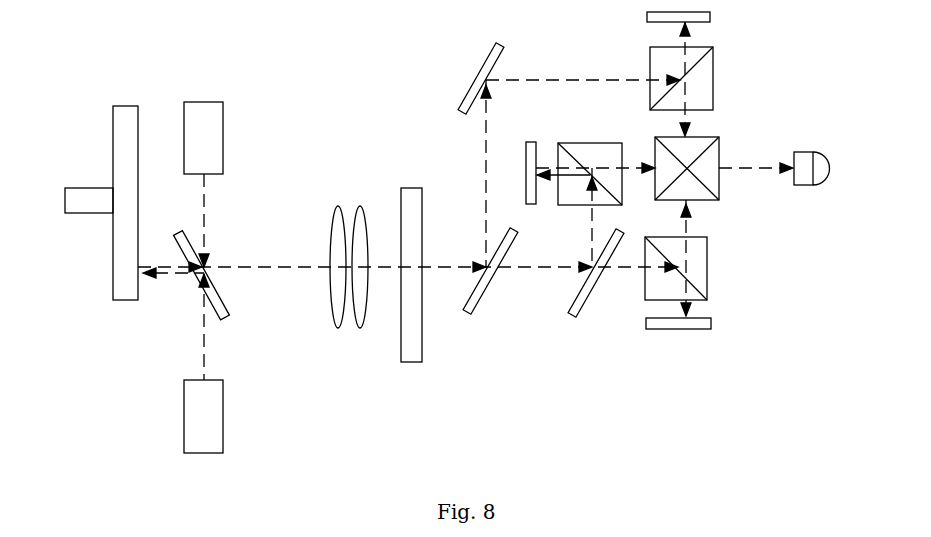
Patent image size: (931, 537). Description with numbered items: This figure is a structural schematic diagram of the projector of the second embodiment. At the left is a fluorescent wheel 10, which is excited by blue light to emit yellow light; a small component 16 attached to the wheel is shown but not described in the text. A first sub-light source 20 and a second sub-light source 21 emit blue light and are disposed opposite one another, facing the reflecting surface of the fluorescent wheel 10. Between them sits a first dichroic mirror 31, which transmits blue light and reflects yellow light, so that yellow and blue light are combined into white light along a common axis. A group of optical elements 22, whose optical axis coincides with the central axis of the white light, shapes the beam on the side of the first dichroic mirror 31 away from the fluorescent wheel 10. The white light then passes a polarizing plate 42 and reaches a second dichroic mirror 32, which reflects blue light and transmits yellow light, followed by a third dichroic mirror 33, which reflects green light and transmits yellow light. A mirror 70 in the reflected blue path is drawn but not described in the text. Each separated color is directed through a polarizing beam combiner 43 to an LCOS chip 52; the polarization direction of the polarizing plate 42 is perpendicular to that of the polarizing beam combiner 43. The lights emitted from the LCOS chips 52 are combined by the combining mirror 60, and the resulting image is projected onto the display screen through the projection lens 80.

The fluorescent wheel 10 is at (123, 121).
The sample holder arm 16 is at (89, 205).
The first sub-light source 20 is at (203, 150).
The second sub-light source 21 is at (203, 417).
The group of optical elements 22 is at (375, 200).
The first dichroic mirror 31 is at (223, 302).
The second dichroic mirror 32 is at (473, 313).
The third dichroic mirror 33 is at (583, 302).
The polarizing plate 42 is at (407, 343).
The polarizing beam combiner 43 is at (590, 152).
The LCOS chip 52 is at (527, 143).
The combining mirror 60 is at (705, 168).
The reflecting mirror 70 is at (497, 50).
The projection lens 80 is at (806, 175).